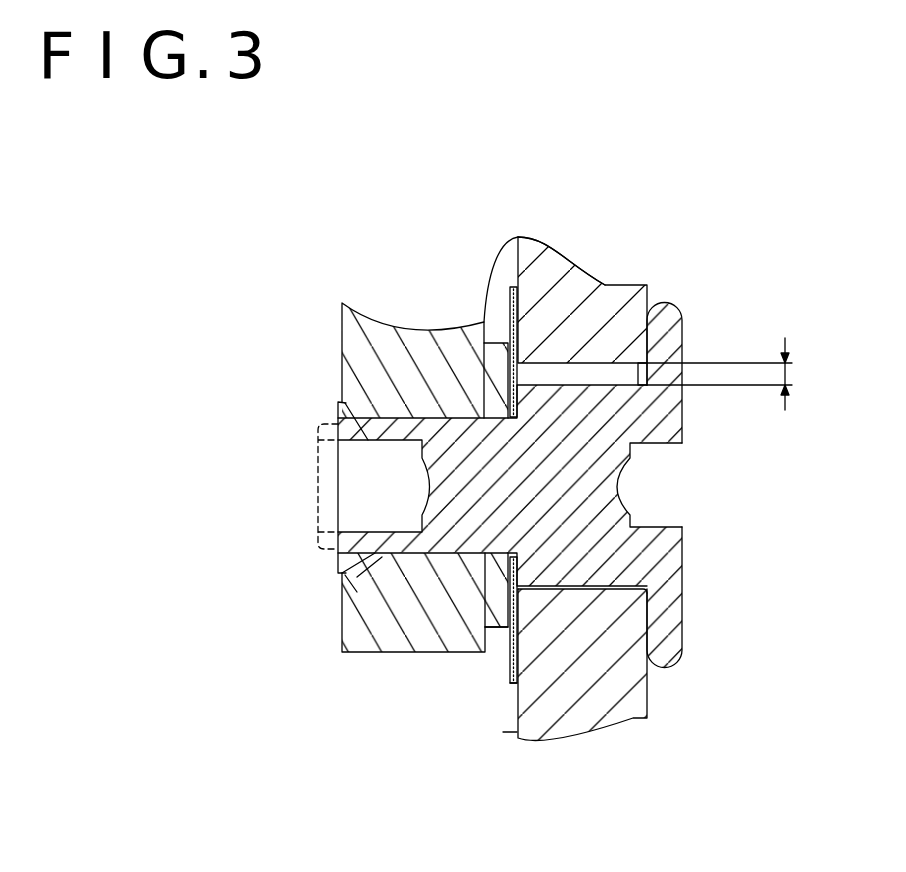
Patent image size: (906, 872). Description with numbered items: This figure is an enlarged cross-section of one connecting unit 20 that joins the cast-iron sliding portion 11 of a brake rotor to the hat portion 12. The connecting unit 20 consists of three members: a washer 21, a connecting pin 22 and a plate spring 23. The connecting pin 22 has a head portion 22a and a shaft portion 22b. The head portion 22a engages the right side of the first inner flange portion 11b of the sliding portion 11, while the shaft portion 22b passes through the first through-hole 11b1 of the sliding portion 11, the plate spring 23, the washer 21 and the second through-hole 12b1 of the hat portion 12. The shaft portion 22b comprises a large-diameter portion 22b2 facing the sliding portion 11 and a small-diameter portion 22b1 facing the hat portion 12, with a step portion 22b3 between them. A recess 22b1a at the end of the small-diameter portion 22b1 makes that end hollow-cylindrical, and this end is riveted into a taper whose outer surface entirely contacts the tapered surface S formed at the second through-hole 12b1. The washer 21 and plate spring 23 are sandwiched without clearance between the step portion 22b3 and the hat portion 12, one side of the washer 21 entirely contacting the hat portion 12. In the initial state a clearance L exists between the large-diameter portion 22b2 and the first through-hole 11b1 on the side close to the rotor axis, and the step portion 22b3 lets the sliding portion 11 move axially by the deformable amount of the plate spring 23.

The sliding portion 11 is at (634, 718).
The first inner flange portion 11b is at (610, 298).
The first through-hole 11b1 is at (552, 370).
The hat portion 12 is at (342, 339).
The second through-hole 12b1 is at (420, 560).
The connecting unit 20 is at (684, 336).
The washer 21 is at (506, 628).
The connecting pin 22 is at (674, 426).
The head portion 22a is at (673, 636).
The shaft portion 22b is at (597, 497).
The small-diameter portion 22b1 is at (405, 428).
The recess 22b1a is at (397, 440).
The large-diameter portion 22b2 is at (586, 560).
The step portion 22b3 is at (473, 322).
The plate spring 23 is at (513, 677).
The clearance L is at (792, 378).
The tapered surface S is at (348, 586).